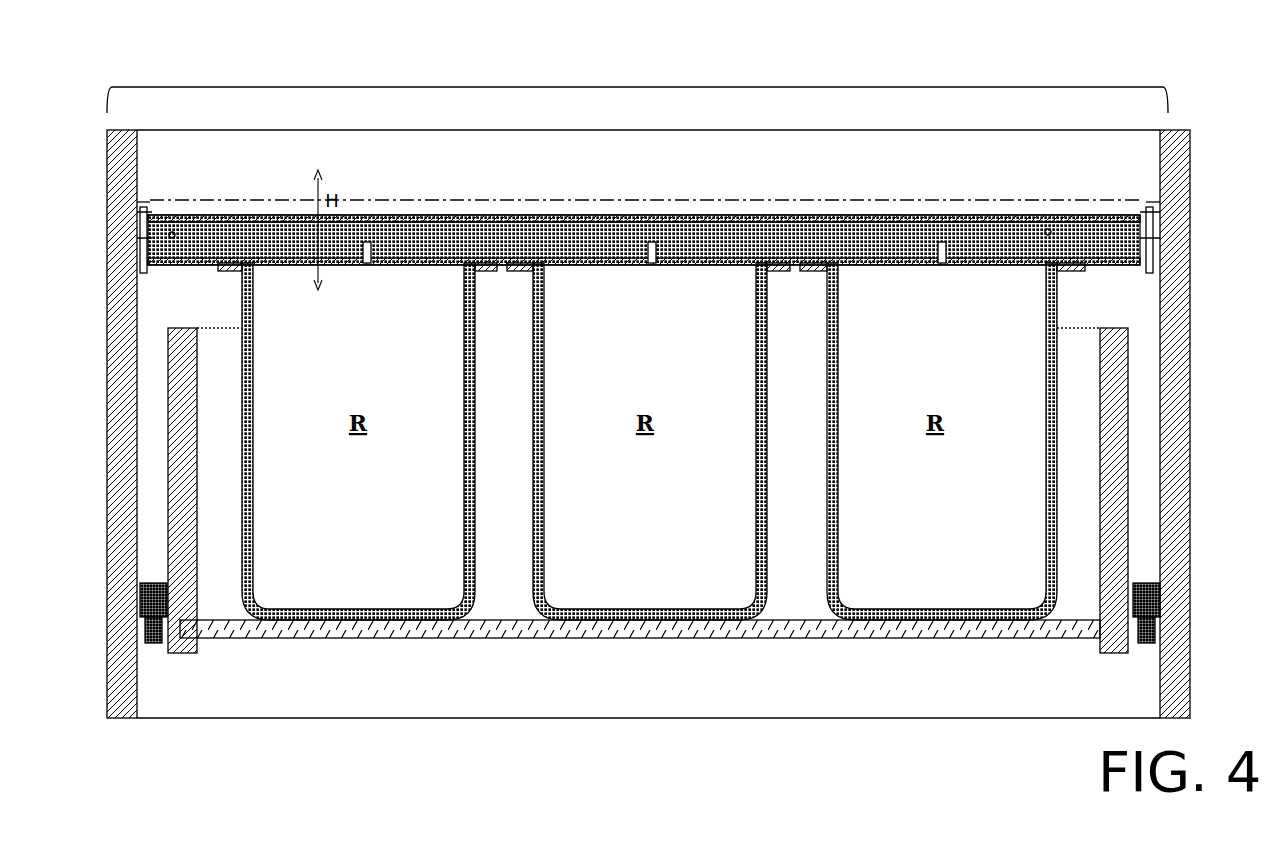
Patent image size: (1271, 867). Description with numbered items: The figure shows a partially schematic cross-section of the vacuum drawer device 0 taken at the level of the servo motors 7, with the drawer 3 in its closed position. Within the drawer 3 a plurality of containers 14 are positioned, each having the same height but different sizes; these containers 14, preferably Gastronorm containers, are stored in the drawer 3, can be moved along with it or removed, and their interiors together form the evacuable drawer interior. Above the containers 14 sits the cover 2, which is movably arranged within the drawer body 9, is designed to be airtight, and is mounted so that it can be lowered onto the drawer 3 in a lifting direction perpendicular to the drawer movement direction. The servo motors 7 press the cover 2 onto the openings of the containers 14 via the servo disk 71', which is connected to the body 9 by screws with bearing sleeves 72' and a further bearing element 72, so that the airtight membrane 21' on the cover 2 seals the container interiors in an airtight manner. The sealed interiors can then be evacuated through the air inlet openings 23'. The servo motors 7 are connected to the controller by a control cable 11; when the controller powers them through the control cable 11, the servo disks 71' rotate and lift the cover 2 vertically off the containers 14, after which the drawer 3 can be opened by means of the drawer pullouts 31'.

The vacuum drawer device 0 is at (640, 87).
The drawer body 9 is at (1100, 130).
The cover 2 is at (632, 216).
The control cable 11 is at (520, 216).
The airtight membrane 21' is at (645, 190).
The air inlet opening 23' is at (654, 278).
The servo motor 7 is at (192, 213).
The bearing sleeve 72' is at (100, 201).
The right fitting 72 is at (1199, 201).
The servo disk 71' is at (647, 458).
The drawer pullout 31' is at (647, 594).
The container 14 is at (473, 560).
The drawer 3 is at (465, 640).